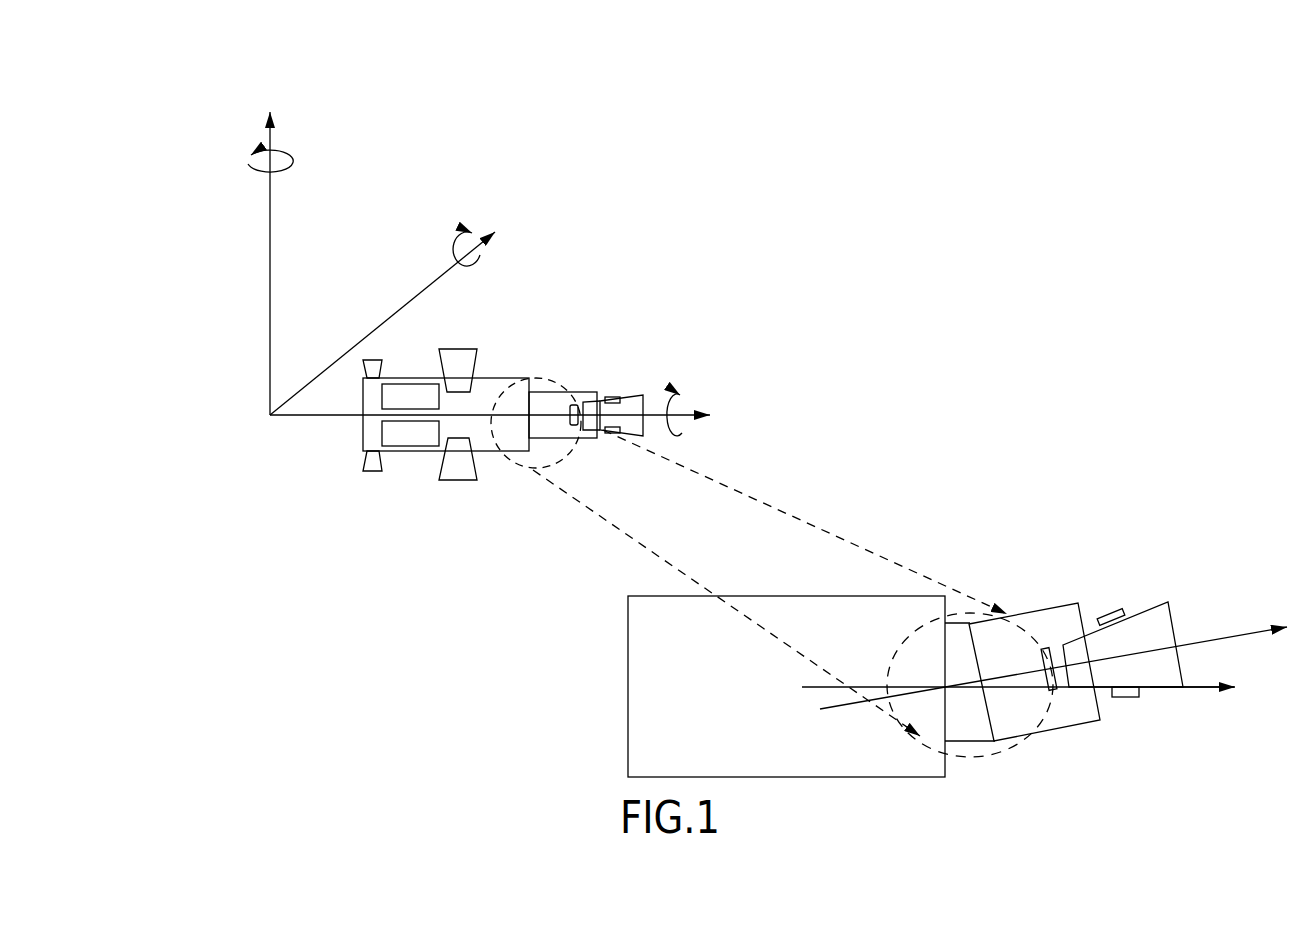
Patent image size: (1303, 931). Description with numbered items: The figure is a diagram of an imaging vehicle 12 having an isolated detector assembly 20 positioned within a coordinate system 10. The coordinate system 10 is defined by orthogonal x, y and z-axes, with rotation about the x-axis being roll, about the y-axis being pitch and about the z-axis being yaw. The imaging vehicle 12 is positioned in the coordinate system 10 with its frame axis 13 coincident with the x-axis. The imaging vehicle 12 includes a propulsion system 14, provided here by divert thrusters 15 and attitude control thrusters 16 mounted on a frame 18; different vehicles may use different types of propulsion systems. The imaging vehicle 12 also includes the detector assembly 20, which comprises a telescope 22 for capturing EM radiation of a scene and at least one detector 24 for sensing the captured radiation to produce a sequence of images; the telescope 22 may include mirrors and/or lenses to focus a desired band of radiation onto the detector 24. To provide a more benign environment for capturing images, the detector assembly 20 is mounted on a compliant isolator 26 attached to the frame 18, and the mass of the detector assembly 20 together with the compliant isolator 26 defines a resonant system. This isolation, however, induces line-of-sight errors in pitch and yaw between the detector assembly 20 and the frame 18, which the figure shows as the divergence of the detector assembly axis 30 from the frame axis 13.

The coordinate system 10 is at (662, 150).
The imaging vehicle 12 is at (525, 337).
The frame axis 13 is at (1195, 688).
The propulsion system 14 is at (350, 499).
The divert thrusters 15 is at (463, 481).
The attitude control thrusters 16 is at (380, 472).
The frame 18 is at (490, 408).
The detector assembly 20 is at (607, 377).
The telescope 22 is at (1160, 601).
The detector 24 is at (1049, 648).
The compliant isolator 26 is at (962, 623).
The detector assembly axis 30 is at (1223, 633).